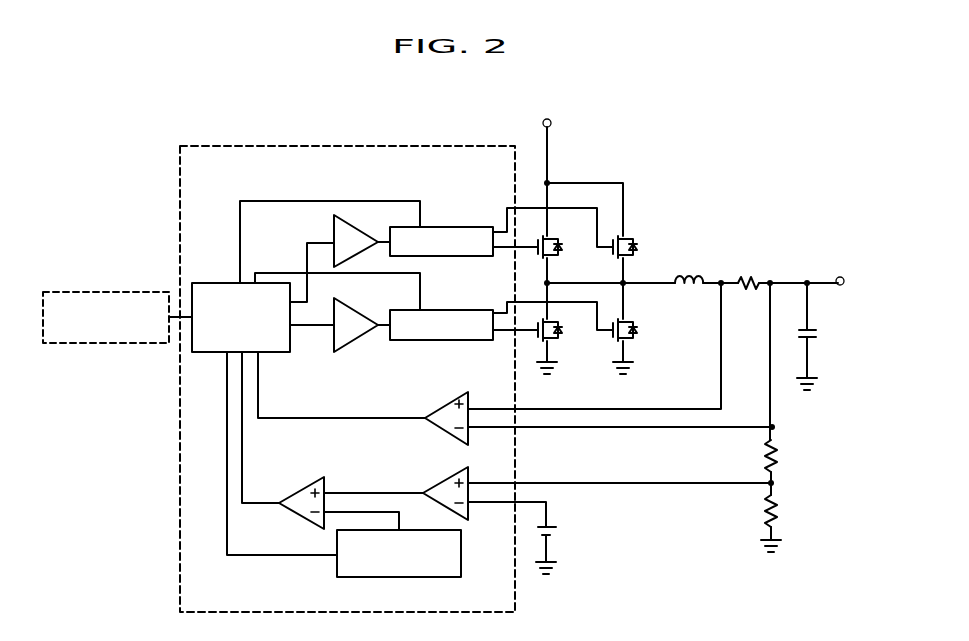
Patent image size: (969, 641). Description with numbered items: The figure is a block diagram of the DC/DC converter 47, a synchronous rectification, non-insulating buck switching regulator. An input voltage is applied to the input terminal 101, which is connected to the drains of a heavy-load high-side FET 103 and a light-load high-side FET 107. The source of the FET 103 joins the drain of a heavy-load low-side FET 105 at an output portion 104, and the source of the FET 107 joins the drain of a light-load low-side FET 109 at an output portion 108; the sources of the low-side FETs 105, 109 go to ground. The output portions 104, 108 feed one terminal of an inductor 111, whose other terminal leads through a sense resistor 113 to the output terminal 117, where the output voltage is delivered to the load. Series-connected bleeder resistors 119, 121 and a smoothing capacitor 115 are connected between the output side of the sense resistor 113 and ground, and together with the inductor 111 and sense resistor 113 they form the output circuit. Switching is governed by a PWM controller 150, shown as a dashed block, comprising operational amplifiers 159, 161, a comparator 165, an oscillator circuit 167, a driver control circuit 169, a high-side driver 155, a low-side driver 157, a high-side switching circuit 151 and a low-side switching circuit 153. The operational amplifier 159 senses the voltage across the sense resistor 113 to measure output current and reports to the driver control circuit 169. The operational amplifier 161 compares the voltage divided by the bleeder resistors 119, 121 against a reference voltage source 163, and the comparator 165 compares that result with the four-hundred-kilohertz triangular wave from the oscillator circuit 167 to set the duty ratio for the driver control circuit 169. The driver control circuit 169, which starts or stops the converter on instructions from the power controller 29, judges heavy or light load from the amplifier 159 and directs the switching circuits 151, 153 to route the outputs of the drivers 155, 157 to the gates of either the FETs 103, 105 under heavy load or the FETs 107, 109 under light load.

The DC/DC converter 47 is at (96, 143).
The power controller 29 is at (126, 292).
The PWM controller 150 is at (352, 146).
The driver control circuit 169 is at (212, 282).
The high-side driver 155 is at (334, 228).
The low-side driver 157 is at (357, 307).
The high-side switching circuit 151 is at (447, 227).
The low-side switching circuit 153 is at (480, 340).
The operational amplifier 159 is at (444, 407).
The operational amplifier 161 is at (436, 484).
The comparator 165 is at (327, 480).
The reference voltage source 163 is at (555, 523).
The oscillator circuit 167 is at (337, 567).
The input terminal 101 is at (552, 119).
The heavy-load high-side FET 103 is at (560, 250).
The light-load high-side FET 107 is at (640, 244).
The heavy-load low-side FET 105 is at (560, 334).
The light-load low-side FET 109 is at (638, 331).
The output portion 104 is at (545, 283).
The output portion 108 is at (624, 284).
The inductor 111 is at (700, 282).
The sense resistor 113 is at (754, 278).
The smoothing capacitor 115 is at (808, 328).
The output terminal 117 is at (837, 277).
The bleeder resistor 119 is at (774, 446).
The bleeder resistor 121 is at (774, 503).